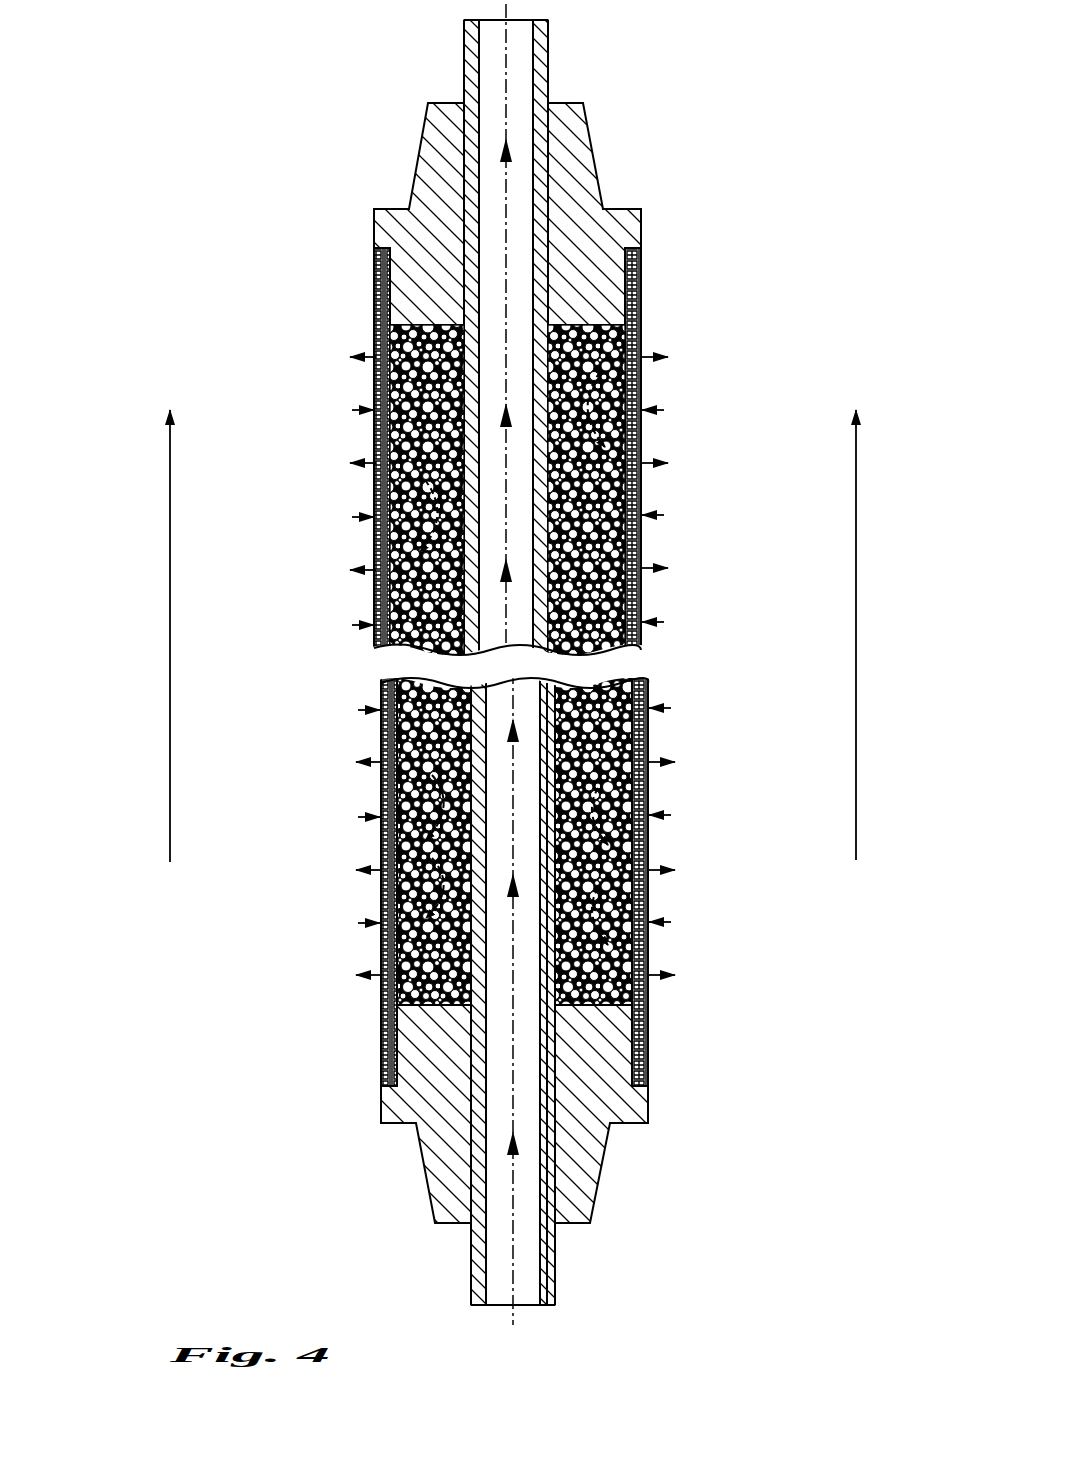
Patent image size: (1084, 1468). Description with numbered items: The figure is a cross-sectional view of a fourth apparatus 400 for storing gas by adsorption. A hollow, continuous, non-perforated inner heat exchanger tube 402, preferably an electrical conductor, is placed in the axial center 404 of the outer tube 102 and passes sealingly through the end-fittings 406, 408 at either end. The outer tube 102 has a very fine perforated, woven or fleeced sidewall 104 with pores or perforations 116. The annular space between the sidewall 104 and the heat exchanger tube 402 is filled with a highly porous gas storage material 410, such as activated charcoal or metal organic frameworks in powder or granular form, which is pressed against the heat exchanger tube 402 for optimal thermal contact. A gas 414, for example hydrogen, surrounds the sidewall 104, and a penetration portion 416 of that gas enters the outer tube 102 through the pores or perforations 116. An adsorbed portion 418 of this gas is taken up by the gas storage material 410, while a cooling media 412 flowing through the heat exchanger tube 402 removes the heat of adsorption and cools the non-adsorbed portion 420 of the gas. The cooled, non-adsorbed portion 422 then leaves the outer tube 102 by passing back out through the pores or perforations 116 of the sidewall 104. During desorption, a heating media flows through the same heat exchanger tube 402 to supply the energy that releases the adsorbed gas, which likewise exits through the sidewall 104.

The fourth apparatus 400 is at (316, 168).
The inner heat exchanger tube 402 is at (471, 1267).
The axial center 404 is at (505, 50).
The end-fitting 406 is at (590, 130).
The end-fitting 408 is at (422, 1160).
The sidewall 104 is at (375, 290).
The outer tube 102 is at (383, 1052).
The highly porous gas storage material 410 is at (647, 987).
The cooling media 412 is at (516, 1188).
The gas 414 is at (170, 768).
The penetration portion 416 is at (365, 408).
The adsorbed portion 418 is at (376, 533).
The non-adsorbed portion 420 is at (376, 480).
The cooled non-adsorbed portion 422 is at (358, 355).
The pores or perforations 116 is at (382, 892).